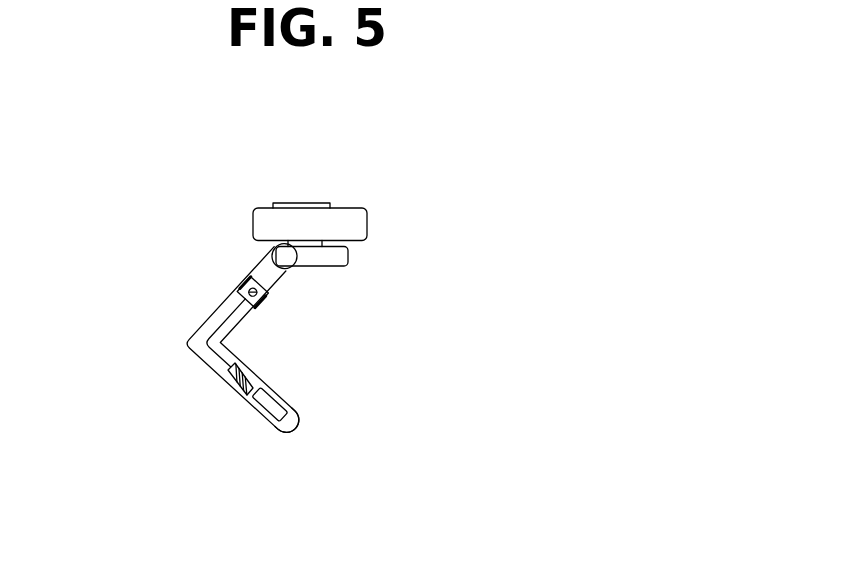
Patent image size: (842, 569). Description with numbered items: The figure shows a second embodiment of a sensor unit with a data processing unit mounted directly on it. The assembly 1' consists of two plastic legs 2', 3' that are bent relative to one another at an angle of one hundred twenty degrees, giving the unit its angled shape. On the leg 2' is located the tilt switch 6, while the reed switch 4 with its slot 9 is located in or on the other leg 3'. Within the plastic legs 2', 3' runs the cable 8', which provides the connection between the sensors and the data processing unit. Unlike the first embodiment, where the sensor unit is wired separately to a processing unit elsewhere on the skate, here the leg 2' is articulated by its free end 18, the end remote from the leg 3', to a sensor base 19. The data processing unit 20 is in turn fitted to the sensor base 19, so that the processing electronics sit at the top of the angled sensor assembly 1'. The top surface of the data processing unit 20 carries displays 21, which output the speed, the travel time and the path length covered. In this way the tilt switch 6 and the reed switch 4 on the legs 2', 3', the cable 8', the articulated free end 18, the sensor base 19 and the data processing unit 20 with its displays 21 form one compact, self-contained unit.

The assembly 1' is at (246, 326).
The leg 2' is at (301, 334).
The leg 3' is at (333, 384).
The reed switch 4 is at (237, 393).
The tilt switch 6 is at (240, 287).
The cable 8' is at (208, 350).
The slot 9 is at (293, 410).
The free end 18 is at (317, 265).
The sensor base 19 is at (335, 255).
The data processing unit 20 is at (347, 223).
The displays 21 is at (296, 203).